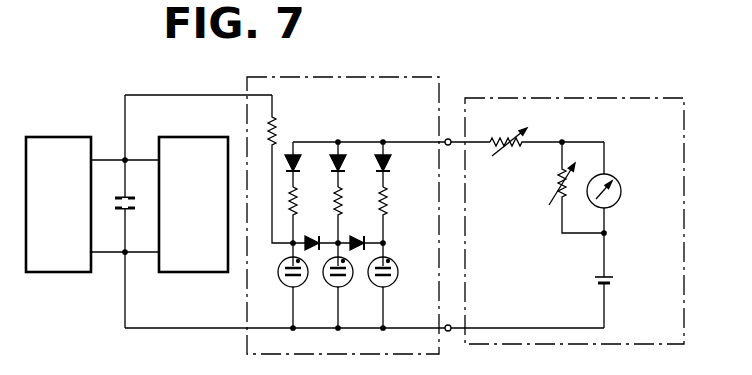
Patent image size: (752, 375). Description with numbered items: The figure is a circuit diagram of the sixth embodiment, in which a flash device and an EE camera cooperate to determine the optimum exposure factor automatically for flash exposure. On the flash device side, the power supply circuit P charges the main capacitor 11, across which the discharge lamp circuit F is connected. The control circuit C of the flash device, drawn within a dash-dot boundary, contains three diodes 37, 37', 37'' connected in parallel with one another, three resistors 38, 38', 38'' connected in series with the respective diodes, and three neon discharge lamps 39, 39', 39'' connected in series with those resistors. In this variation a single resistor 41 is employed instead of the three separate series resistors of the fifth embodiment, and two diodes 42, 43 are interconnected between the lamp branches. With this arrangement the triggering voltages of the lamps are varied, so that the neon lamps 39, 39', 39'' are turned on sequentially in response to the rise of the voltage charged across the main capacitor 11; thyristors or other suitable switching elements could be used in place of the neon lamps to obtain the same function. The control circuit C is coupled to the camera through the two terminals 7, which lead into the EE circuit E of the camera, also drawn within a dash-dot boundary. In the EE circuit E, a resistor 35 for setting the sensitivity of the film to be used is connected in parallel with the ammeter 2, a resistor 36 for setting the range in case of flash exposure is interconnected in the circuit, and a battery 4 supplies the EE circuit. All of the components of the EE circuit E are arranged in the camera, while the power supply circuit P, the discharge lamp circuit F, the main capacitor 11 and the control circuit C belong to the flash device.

The power supply circuit P is at (56, 137).
The discharge lamp circuit F is at (184, 137).
The main capacitor 11 is at (129, 199).
The control circuit C is at (418, 77).
The resistor 41 is at (272, 125).
The diode 37 is at (303, 151).
The diode 37' is at (351, 151).
The diode 37'' is at (399, 151).
The resistor 38 is at (311, 208).
The resistor 38' is at (358, 208).
The resistor 38'' is at (406, 208).
The diode 42 is at (310, 236).
The diode 43 is at (356, 236).
The neon discharge lamp 39 is at (302, 285).
The neon discharge lamp 39' is at (351, 285).
The neon discharge lamp 39'' is at (401, 285).
The terminal 7 is at (447, 138).
The EE circuit E is at (557, 98).
The resistor 36 is at (499, 135).
The resistor 35 is at (556, 185).
The ammeter 2 is at (614, 182).
The battery 4 is at (605, 275).